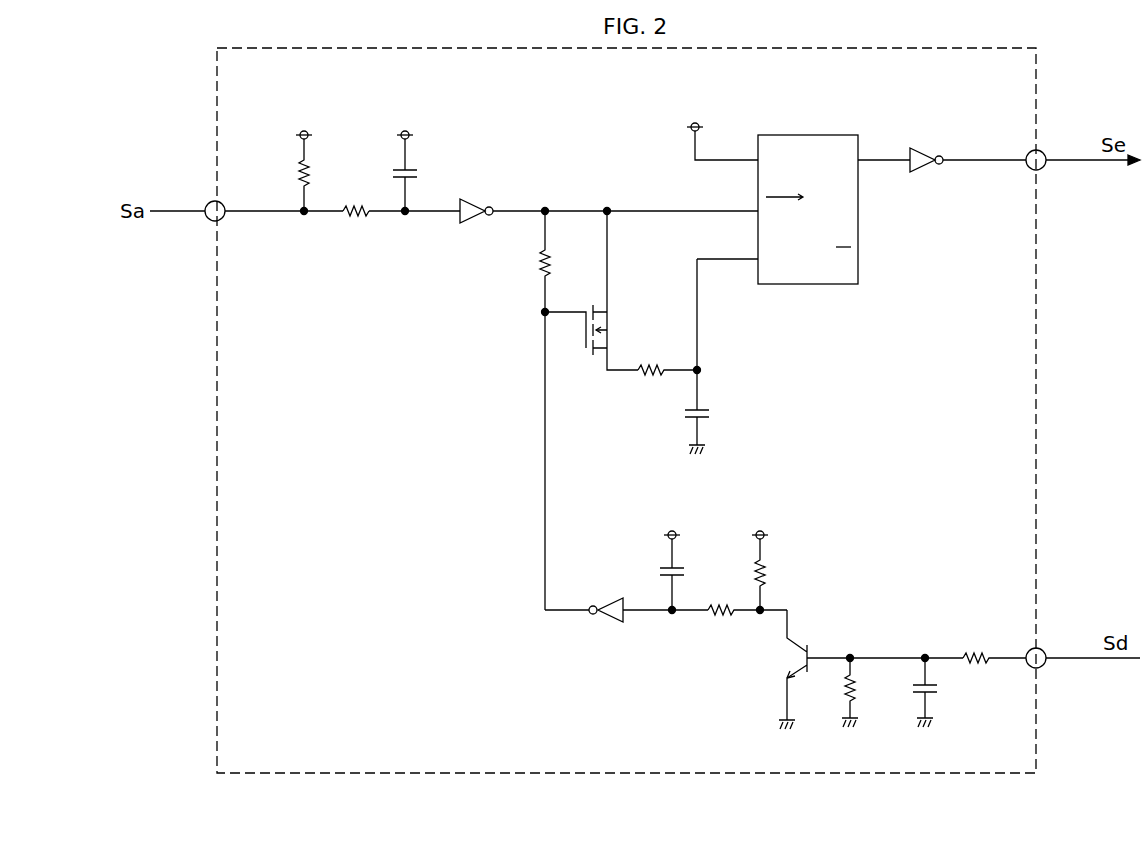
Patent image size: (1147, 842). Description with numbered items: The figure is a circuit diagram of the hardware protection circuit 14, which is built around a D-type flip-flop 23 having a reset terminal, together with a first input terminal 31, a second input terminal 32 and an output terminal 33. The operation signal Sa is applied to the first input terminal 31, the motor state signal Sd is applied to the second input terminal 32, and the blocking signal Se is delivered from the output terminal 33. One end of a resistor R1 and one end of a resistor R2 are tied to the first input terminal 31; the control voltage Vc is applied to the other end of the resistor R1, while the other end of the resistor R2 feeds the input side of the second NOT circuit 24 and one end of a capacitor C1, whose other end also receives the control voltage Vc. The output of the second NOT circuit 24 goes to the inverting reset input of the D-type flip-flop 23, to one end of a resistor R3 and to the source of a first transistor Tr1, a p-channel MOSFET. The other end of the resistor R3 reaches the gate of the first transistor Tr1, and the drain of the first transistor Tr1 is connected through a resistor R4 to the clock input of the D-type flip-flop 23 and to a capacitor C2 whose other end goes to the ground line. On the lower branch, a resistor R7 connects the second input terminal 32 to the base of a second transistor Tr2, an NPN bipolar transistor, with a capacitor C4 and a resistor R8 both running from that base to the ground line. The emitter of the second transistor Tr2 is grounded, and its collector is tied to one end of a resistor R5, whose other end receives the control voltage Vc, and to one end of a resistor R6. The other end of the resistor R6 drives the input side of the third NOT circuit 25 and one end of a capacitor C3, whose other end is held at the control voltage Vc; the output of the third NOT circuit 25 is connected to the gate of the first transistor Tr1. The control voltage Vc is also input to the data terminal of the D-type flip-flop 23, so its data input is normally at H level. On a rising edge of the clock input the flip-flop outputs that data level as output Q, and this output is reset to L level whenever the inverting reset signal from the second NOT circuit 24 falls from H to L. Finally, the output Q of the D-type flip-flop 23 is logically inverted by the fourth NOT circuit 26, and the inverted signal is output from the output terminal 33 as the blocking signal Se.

The hardware protection circuit 14 is at (932, 46).
The D-type flip-flop 23 is at (822, 284).
The second NOT circuit 24 is at (473, 205).
The third NOT circuit 25 is at (609, 622).
The fourth NOT circuit 26 is at (921, 172).
The first input terminal 31 is at (212, 203).
The second input terminal 32 is at (1042, 648).
The output terminal 33 is at (1042, 150).
The resistor R1 is at (300, 180).
The resistor R2 is at (356, 220).
The resistor R3 is at (538, 270).
The resistor R4 is at (651, 380).
The resistor R5 is at (770, 572).
The resistor R6 is at (720, 622).
The resistor R7 is at (977, 649).
The resistor R8 is at (857, 683).
The capacitor C1 is at (412, 174).
The capacitor C2 is at (712, 413).
The capacitor C3 is at (658, 577).
The capacitor C4 is at (940, 690).
The first transistor Tr1 is at (612, 322).
The second transistor Tr2 is at (798, 646).